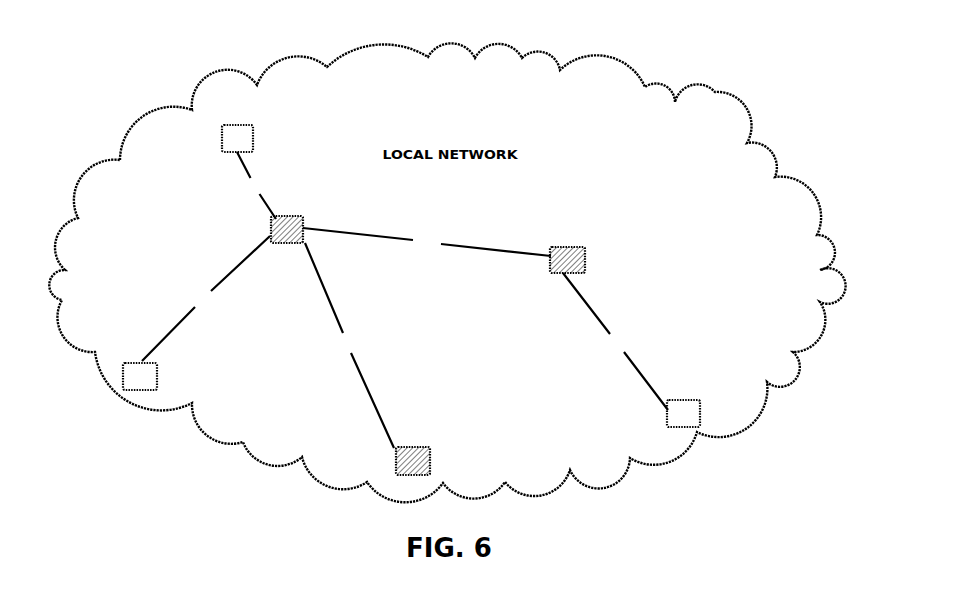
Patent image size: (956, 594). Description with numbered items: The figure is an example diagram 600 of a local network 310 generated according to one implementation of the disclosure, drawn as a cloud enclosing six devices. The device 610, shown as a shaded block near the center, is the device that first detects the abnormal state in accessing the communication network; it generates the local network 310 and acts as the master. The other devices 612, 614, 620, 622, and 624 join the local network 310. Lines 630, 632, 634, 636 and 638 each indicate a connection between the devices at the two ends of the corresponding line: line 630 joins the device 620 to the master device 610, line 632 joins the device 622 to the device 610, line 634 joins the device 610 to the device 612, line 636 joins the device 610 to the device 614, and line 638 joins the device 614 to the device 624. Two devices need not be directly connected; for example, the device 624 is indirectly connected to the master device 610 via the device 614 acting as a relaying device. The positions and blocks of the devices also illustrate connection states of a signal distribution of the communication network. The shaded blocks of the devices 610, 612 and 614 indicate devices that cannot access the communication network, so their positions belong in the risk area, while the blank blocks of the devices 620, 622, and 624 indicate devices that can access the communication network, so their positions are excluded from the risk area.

The example diagram 600 is at (447, 254).
The local network 310 is at (715, 92).
The device 610 is at (293, 216).
The device 612 is at (425, 447).
The device 614 is at (570, 247).
The device 620 is at (241, 125).
The device 622 is at (150, 363).
The device 624 is at (695, 400).
The line 630 is at (256, 185).
The line 632 is at (206, 298).
The line 634 is at (349, 345).
The line 636 is at (427, 242).
The line 638 is at (615, 341).